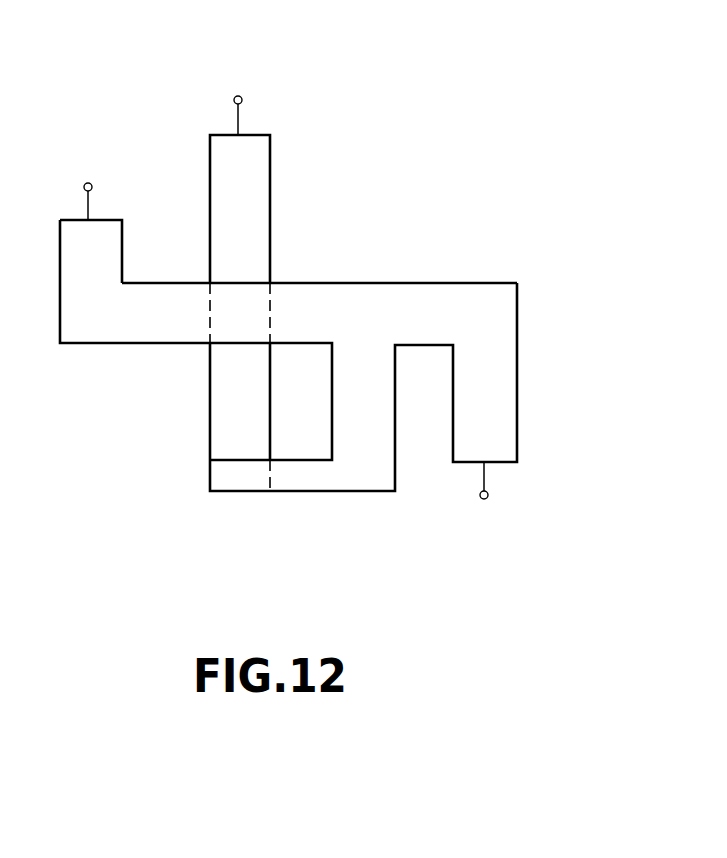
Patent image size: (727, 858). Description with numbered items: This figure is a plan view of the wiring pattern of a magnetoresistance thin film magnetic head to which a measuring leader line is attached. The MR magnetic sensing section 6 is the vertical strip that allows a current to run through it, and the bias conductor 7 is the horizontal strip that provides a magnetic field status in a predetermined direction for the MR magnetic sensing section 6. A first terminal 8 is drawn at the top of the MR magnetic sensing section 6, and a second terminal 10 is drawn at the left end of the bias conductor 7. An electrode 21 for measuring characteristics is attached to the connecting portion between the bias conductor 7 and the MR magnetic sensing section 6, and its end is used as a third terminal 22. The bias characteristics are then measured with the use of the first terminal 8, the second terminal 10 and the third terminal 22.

The MR magnetic sensing section 6 is at (258, 200).
The bias conductor 7 is at (361, 300).
The first terminal 8 is at (238, 96).
The second terminal 10 is at (89, 182).
The electrode for measuring characteristics 21 is at (490, 407).
The third terminal 22 is at (488, 495).